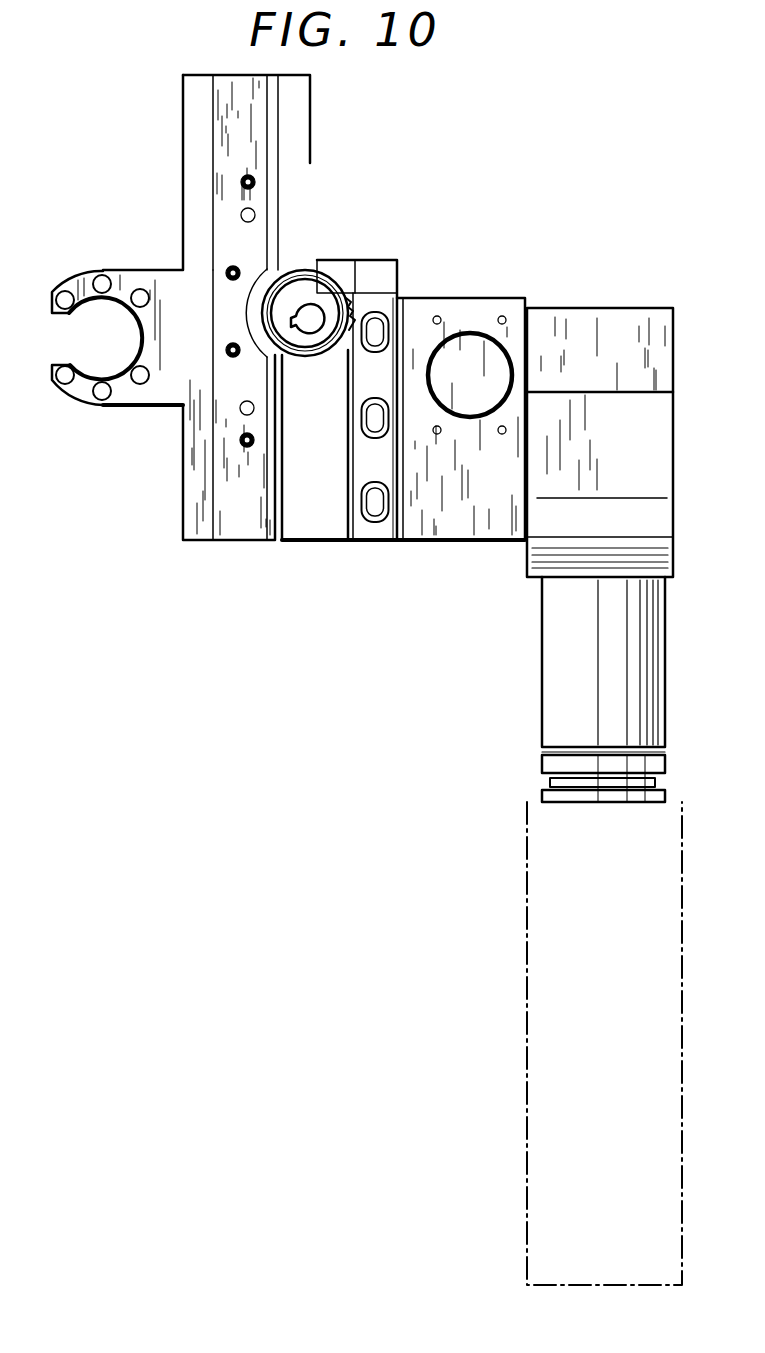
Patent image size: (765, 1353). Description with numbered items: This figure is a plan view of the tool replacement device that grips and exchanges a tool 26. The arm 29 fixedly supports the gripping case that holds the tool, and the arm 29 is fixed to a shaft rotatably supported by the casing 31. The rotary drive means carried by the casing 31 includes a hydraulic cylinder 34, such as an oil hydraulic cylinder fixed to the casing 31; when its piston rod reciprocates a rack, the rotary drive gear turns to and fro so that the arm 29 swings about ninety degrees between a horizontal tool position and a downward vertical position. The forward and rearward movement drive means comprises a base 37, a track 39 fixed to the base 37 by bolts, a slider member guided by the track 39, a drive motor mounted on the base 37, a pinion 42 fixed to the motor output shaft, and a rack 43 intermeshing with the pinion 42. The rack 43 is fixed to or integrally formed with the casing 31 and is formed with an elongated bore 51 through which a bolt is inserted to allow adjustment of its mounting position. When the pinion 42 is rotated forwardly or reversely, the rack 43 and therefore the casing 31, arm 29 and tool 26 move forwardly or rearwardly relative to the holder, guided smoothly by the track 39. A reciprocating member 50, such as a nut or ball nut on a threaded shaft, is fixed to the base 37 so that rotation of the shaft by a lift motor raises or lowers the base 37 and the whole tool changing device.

The tool 26 is at (545, 967).
The arm 29 is at (593, 333).
The casing 31 is at (307, 523).
The hydraulic cylinder 34 is at (470, 347).
The base 37 is at (197, 507).
The track 39 is at (293, 127).
The pinion 42 is at (300, 267).
The rack 43 is at (348, 520).
The reciprocating member 50 is at (125, 393).
The elongated bore 51 is at (383, 520).